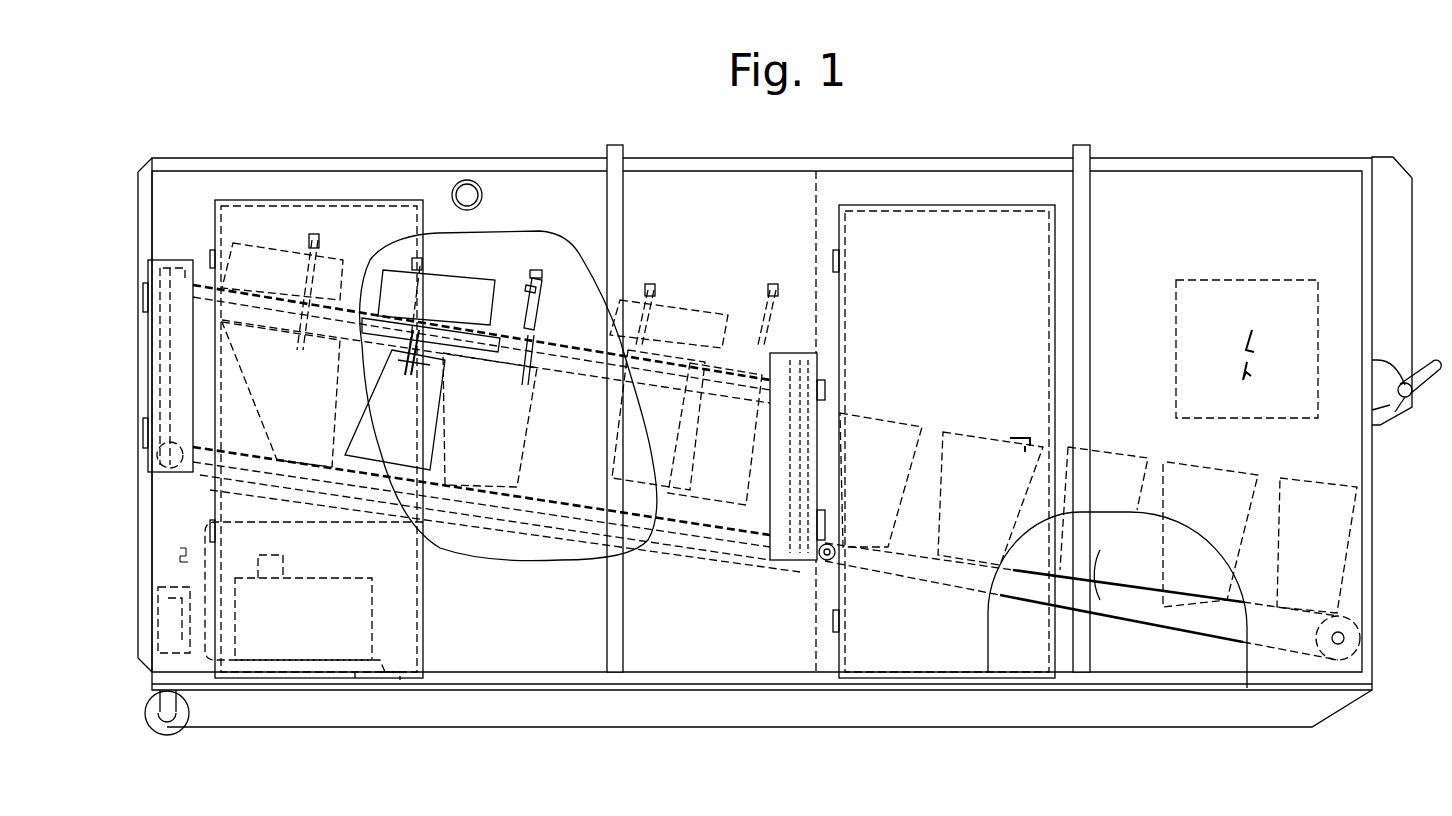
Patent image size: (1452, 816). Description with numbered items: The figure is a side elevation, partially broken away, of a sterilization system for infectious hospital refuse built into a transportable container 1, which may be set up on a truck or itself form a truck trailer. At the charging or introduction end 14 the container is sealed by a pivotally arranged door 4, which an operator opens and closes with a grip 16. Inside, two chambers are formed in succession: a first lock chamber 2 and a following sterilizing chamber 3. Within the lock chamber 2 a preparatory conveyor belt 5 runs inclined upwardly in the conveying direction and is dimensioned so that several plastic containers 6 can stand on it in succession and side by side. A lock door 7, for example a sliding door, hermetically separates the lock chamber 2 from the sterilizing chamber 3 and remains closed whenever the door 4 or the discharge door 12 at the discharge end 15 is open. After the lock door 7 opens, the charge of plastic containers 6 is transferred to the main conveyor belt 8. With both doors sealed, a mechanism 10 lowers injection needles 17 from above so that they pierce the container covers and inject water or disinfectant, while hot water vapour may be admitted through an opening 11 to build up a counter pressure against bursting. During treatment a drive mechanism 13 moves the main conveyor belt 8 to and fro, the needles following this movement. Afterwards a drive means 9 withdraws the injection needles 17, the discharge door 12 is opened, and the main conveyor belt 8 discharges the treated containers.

The container 1 is at (983, 137).
The lock chamber 2 is at (1190, 205).
The sterilizing chamber 3 is at (665, 195).
The door 4 is at (1412, 190).
The preparatory conveyor belt 5 is at (1020, 574).
The plastic containers 6 is at (484, 475).
The lock door 7 is at (793, 358).
The main conveyor belt 8 is at (686, 528).
The drive means 9 is at (533, 285).
The mechanism 10 is at (450, 285).
The opening 11 is at (468, 195).
The discharge door 12 is at (146, 282).
The drive mechanism 13 is at (320, 650).
The introduction end 14 is at (1384, 548).
The discharge end 15 is at (135, 527).
The grip 16 is at (1410, 397).
The injection needles 17 is at (522, 380).